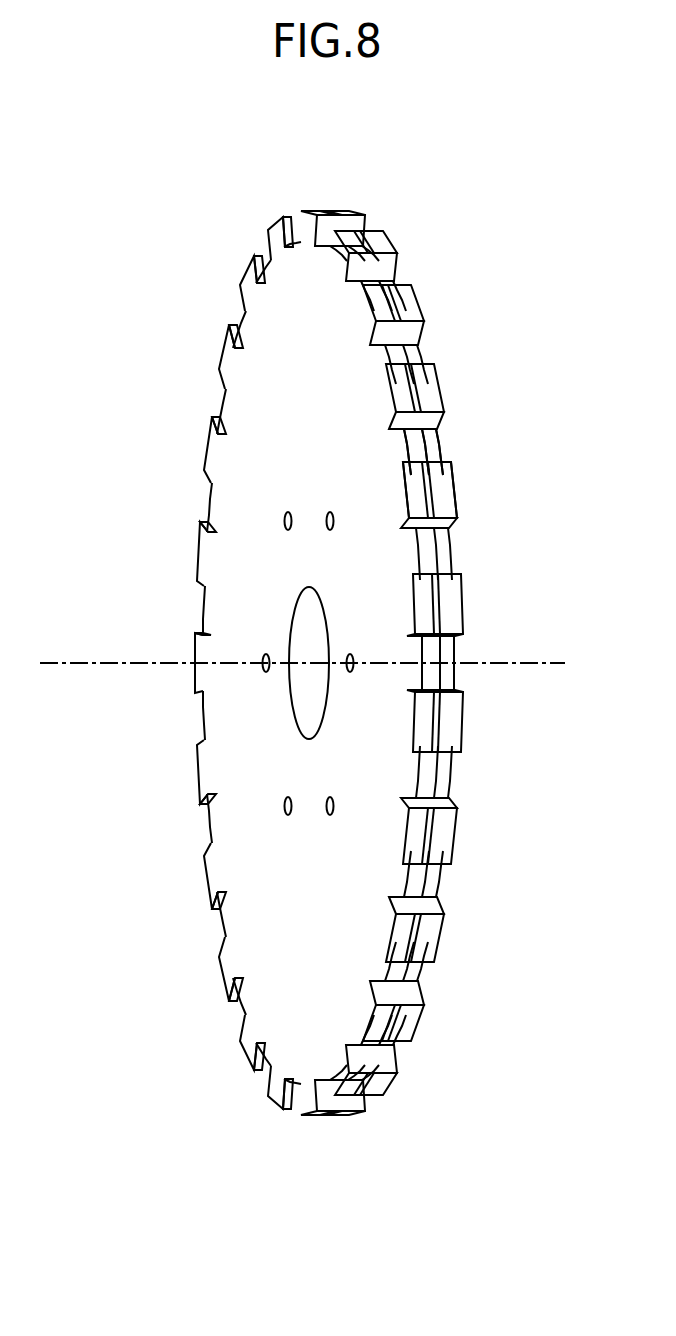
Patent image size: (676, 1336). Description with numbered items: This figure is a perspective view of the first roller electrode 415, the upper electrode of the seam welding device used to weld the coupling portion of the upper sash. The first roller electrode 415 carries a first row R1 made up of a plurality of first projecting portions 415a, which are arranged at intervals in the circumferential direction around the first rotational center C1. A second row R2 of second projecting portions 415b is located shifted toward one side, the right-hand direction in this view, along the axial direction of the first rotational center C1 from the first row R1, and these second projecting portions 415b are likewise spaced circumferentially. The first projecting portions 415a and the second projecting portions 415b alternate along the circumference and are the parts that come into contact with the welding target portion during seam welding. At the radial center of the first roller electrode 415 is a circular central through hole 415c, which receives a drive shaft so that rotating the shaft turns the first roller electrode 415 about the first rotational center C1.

The first roller electrode 415 is at (336, 184).
The first projecting portions 415a is at (400, 889).
The second projecting portions 415b is at (445, 837).
The central through hole 415c is at (310, 623).
The first row R1 is at (424, 436).
The second row R2 is at (456, 489).
The first rotational center C1 is at (85, 656).